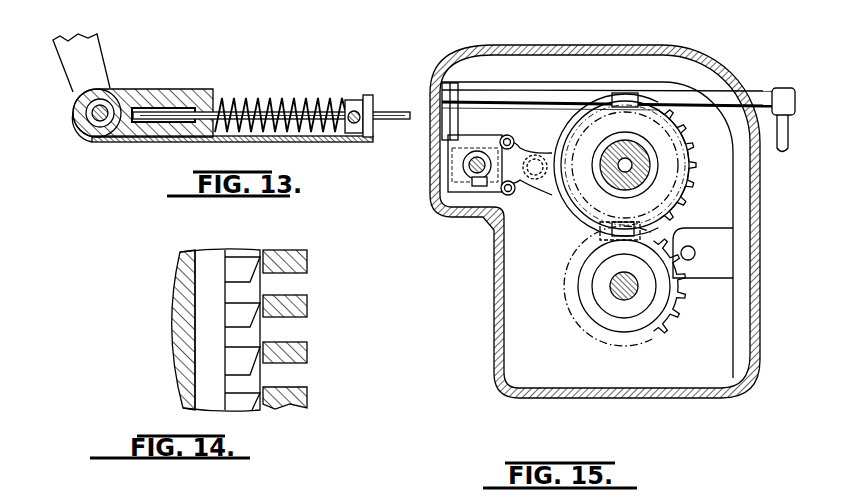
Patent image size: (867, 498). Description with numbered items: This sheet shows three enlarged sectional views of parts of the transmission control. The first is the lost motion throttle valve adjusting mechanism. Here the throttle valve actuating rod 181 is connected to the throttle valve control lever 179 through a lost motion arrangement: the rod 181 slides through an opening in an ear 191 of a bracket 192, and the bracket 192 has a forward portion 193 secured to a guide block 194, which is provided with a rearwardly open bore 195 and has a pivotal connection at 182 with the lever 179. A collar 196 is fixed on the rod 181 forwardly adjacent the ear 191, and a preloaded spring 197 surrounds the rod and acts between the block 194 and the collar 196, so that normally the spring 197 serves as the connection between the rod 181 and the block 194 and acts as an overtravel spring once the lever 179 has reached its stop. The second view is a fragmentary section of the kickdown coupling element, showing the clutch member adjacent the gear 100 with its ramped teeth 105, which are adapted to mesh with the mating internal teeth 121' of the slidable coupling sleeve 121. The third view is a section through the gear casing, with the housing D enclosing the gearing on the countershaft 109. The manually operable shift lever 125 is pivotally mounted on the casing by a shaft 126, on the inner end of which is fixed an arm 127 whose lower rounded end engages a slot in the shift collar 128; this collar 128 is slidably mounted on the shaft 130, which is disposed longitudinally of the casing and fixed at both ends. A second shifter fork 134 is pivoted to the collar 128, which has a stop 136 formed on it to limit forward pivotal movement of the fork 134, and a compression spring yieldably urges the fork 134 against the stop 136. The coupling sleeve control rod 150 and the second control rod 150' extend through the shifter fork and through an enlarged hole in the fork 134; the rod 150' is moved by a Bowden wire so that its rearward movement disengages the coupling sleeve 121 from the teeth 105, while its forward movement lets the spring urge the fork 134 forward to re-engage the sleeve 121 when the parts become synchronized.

In FIG. 13, the throttle valve control lever 179 is at (93, 54).
In FIG. 13, the guide block 194 is at (147, 88).
In FIG. 13, the bracket 192 is at (350, 141).
In FIG. 13, the pivotal connection 182 is at (82, 120).
In FIG. 13, the forward portion of bracket 193 is at (86, 141).
In FIG. 13, the rearwardly open bore 195 is at (173, 121).
In FIG. 13, the throttle valve actuating rod 181 is at (386, 113).
In FIG. 13, the preloaded spring 197 is at (330, 83).
In FIG. 13, the ear 191 is at (368, 99).
In FIG. 13, the collar 196 is at (372, 135).
In FIG. 14, the gear 100 is at (180, 270).
In FIG. 14, the ramped teeth 105 is at (243, 253).
In FIG. 14, the internal teeth 121' is at (311, 329).
In FIG. 15, the housing D is at (692, 62).
In FIG. 15, the shaft 126 is at (748, 90).
In FIG. 15, the manually operable shift lever 125 is at (777, 153).
In FIG. 15, the slidable coupling sleeve 121 is at (644, 165).
In FIG. 15, the shift collar 128 is at (690, 206).
In FIG. 15, the countershaft 109 is at (606, 289).
In FIG. 15, the second shifter fork 134 is at (574, 231).
In FIG. 15, the arm 127 is at (457, 131).
In FIG. 15, the shaft 130 is at (468, 163).
In FIG. 15, the stop 136 is at (478, 190).
In FIG. 15, the coupling sleeve control rod 150 is at (518, 129).
In FIG. 15, the second coupling sleeve control rod 150' is at (521, 203).